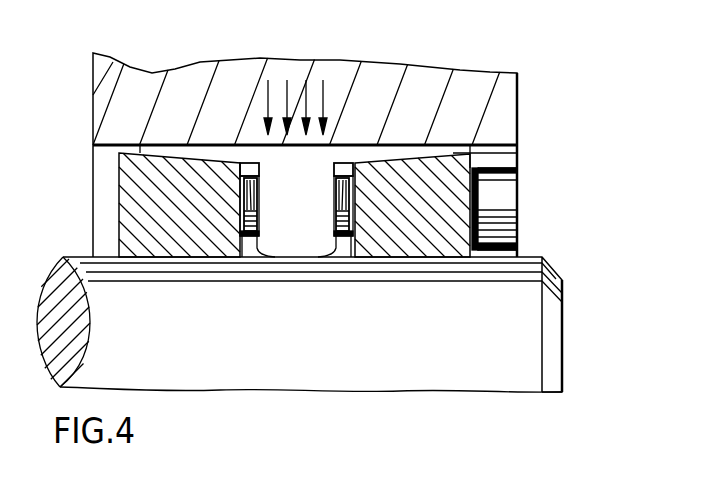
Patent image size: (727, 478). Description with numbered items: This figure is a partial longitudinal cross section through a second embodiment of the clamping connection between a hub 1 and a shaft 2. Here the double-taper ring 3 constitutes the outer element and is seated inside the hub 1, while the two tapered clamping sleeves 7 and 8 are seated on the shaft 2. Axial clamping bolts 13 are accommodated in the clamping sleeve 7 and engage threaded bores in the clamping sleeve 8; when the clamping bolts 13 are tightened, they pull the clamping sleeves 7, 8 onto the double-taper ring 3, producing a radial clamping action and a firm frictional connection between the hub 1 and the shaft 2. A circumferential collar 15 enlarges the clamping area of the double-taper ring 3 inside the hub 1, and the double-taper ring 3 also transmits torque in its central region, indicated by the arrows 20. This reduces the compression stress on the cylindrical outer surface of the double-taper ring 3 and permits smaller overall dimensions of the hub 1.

The hub 1 is at (510, 98).
The double-taper ring 3 is at (320, 157).
The arrows 20 is at (268, 97).
The clamping sleeve 8 is at (190, 237).
The clamping sleeve 7 is at (423, 238).
The circumferential collar 15 is at (312, 243).
The clamping bolts 13 is at (512, 190).
The shaft 2 is at (533, 320).